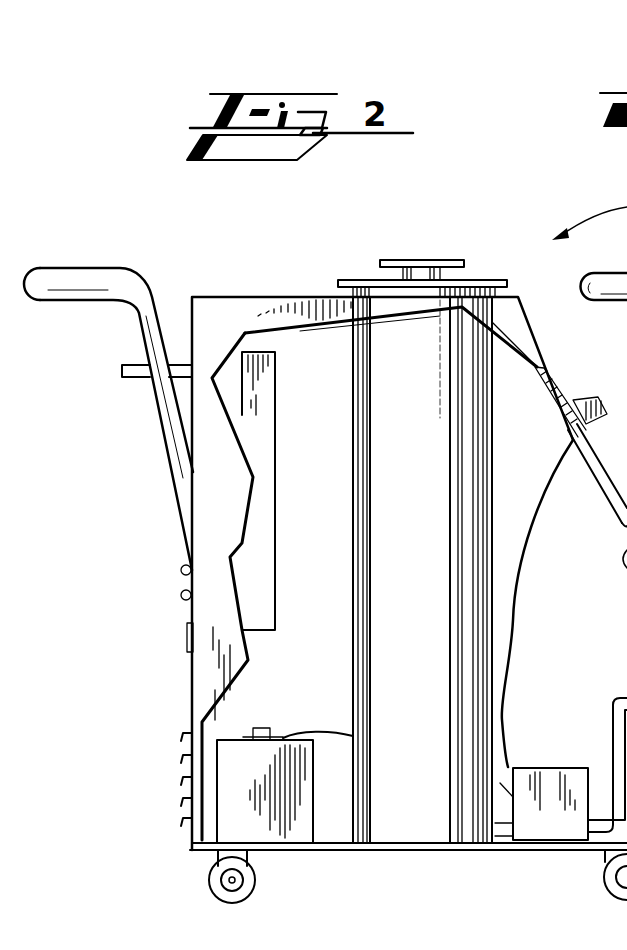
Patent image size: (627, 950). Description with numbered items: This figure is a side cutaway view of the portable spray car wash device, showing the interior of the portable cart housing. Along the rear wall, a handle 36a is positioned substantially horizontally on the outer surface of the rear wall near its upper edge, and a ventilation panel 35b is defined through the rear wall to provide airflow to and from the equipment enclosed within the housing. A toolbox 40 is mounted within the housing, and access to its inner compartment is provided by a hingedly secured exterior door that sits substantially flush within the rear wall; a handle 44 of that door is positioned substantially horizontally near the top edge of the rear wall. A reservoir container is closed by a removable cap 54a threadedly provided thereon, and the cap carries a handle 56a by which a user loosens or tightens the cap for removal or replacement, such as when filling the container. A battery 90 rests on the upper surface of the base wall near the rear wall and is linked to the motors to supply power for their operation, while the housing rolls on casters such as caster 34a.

The handle 36a is at (84, 278).
The handle 56a is at (397, 260).
The removable cap 54a is at (353, 280).
The handle 44 is at (133, 379).
The toolbox 40 is at (265, 417).
The ventilation panel 35b is at (183, 758).
The caster wheel 34a is at (205, 873).
The battery 90 is at (297, 830).